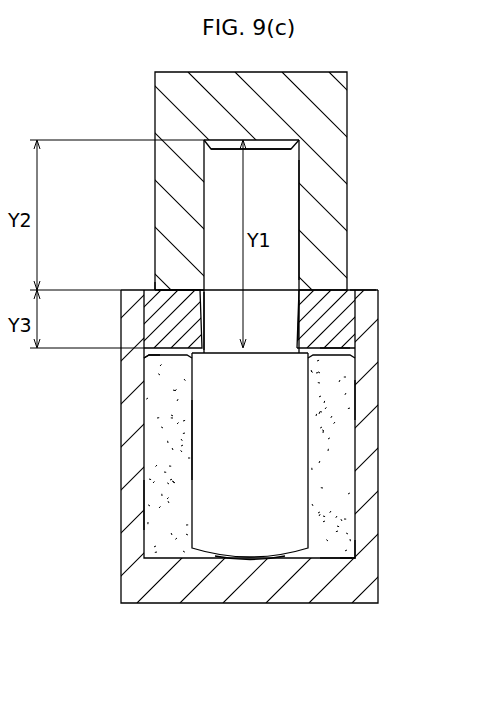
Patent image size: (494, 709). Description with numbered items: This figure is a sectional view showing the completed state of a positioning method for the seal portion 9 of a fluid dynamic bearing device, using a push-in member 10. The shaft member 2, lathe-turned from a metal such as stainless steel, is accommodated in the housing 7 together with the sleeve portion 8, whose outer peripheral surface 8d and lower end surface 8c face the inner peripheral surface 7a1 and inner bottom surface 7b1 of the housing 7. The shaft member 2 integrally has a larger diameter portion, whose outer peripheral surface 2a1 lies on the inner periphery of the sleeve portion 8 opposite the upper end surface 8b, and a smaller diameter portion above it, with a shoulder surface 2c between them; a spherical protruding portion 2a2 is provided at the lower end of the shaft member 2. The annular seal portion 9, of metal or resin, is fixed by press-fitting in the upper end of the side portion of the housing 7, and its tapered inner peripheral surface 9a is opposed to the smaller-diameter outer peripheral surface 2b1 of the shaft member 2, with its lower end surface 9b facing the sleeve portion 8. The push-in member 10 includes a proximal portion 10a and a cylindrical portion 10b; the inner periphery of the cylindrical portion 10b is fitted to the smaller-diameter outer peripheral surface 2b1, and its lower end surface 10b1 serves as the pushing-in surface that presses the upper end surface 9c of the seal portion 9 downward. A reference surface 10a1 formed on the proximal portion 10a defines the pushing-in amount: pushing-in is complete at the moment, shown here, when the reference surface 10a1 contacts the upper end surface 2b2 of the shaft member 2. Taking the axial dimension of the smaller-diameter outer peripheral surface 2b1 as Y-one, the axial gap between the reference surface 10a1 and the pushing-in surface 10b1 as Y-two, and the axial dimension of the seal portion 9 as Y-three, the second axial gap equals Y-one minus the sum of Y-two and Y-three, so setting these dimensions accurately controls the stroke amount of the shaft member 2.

The shaft member 2 is at (308, 243).
The outer peripheral surface of the larger diameter portion 2a1 is at (190, 438).
The spherical protruding portion 2a2 is at (203, 560).
The smaller-diameter outer peripheral surface 2b1 is at (300, 203).
The upper end surface of the shaft member 2b2 is at (225, 140).
The shoulder surface 2c is at (203, 339).
The housing 7 is at (386, 438).
The inner peripheral surface of the housing 7a1 is at (348, 402).
The inner bottom surface of the housing 7b1 is at (345, 556).
The sleeve portion 8 is at (340, 497).
The upper end surface of the sleeve portion 8b is at (147, 354).
The lower end surface of the sleeve portion 8c is at (343, 553).
The outer peripheral surface of the sleeve portion 8d is at (143, 503).
The seal portion 9 is at (342, 315).
The inner peripheral surface of the seal portion 9a is at (300, 310).
The lower end surface of the seal portion 9b is at (350, 353).
The upper end surface of the seal portion 9c is at (322, 290).
The push-in member 10 is at (147, 192).
The proximal portion 10a is at (307, 110).
The reference surface 10a1 is at (292, 158).
The cylindrical portion 10b is at (172, 262).
The lower end surface of the cylindrical portion 10b1 is at (150, 302).